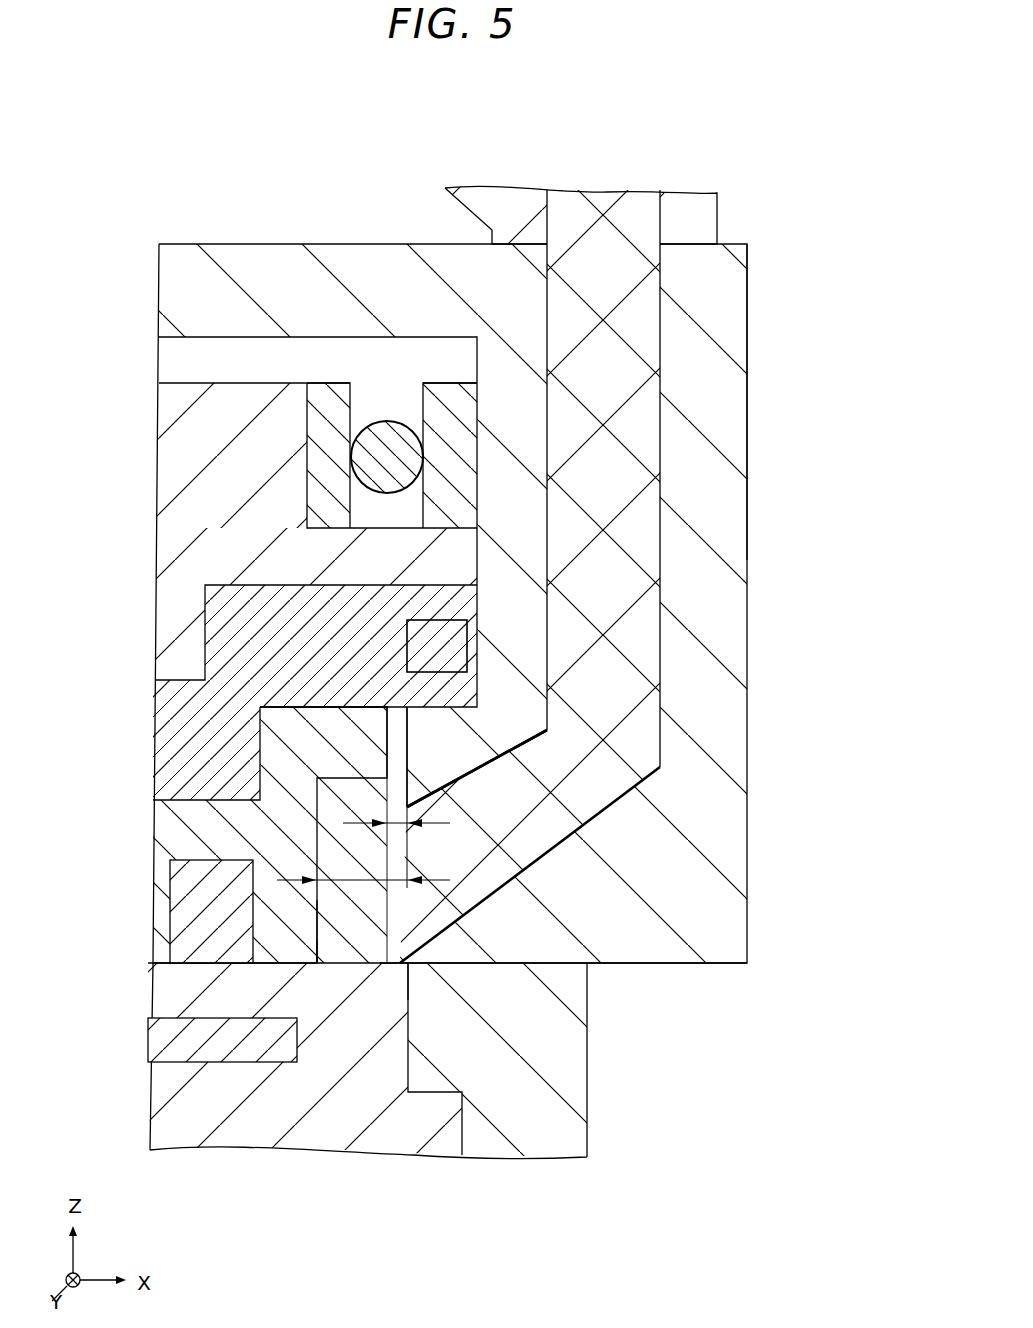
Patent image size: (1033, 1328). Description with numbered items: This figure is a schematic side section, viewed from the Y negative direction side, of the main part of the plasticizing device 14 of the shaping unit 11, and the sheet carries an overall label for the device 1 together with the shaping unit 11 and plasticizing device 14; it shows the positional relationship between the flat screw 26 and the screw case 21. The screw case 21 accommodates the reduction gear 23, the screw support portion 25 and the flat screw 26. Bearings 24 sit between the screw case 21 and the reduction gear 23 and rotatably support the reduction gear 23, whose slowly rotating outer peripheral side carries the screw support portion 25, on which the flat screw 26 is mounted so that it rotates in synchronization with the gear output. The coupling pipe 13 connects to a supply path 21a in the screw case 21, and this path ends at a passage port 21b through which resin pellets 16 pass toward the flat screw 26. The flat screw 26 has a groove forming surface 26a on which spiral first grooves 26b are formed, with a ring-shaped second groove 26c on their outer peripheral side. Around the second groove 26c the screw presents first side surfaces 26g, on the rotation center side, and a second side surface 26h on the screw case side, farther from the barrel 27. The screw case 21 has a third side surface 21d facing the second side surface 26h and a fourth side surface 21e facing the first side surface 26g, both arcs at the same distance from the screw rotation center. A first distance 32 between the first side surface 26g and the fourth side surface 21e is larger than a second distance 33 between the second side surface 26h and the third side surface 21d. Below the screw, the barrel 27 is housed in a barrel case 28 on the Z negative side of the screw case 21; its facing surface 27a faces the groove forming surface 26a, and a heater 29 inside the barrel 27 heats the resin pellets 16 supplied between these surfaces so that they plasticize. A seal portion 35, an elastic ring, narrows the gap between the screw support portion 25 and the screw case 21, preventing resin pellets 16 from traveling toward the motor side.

The work machine 1 is at (453, 653).
The shaping unit 11 is at (452, 653).
The plasticizing device 14 is at (452, 653).
The coupling pipe 13 is at (720, 215).
The resin pellets 16 is at (640, 425).
The screw case 21 is at (493, 671).
The supply path 21a is at (656, 295).
The passage port 21b is at (417, 893).
The third side surface 21d is at (405, 715).
The fourth side surface 21e is at (408, 797).
The reduction gear 23 is at (175, 542).
The bearings 24 is at (425, 384).
The screw support portion 25 is at (175, 702).
The flat screw 26 is at (227, 967).
The groove forming surface 26a is at (293, 963).
The first grooves 26b is at (193, 888).
The second groove 26c is at (343, 935).
The first side surfaces 26g is at (320, 938).
The second side surface 26h is at (385, 768).
The barrel 27 is at (305, 1090).
The facing surface 27a is at (388, 953).
The barrel case 28 is at (573, 1067).
The heater 29 is at (160, 1040).
The first distance 32 is at (385, 883).
The second distance 33 is at (384, 830).
The seal portion 35 is at (470, 637).